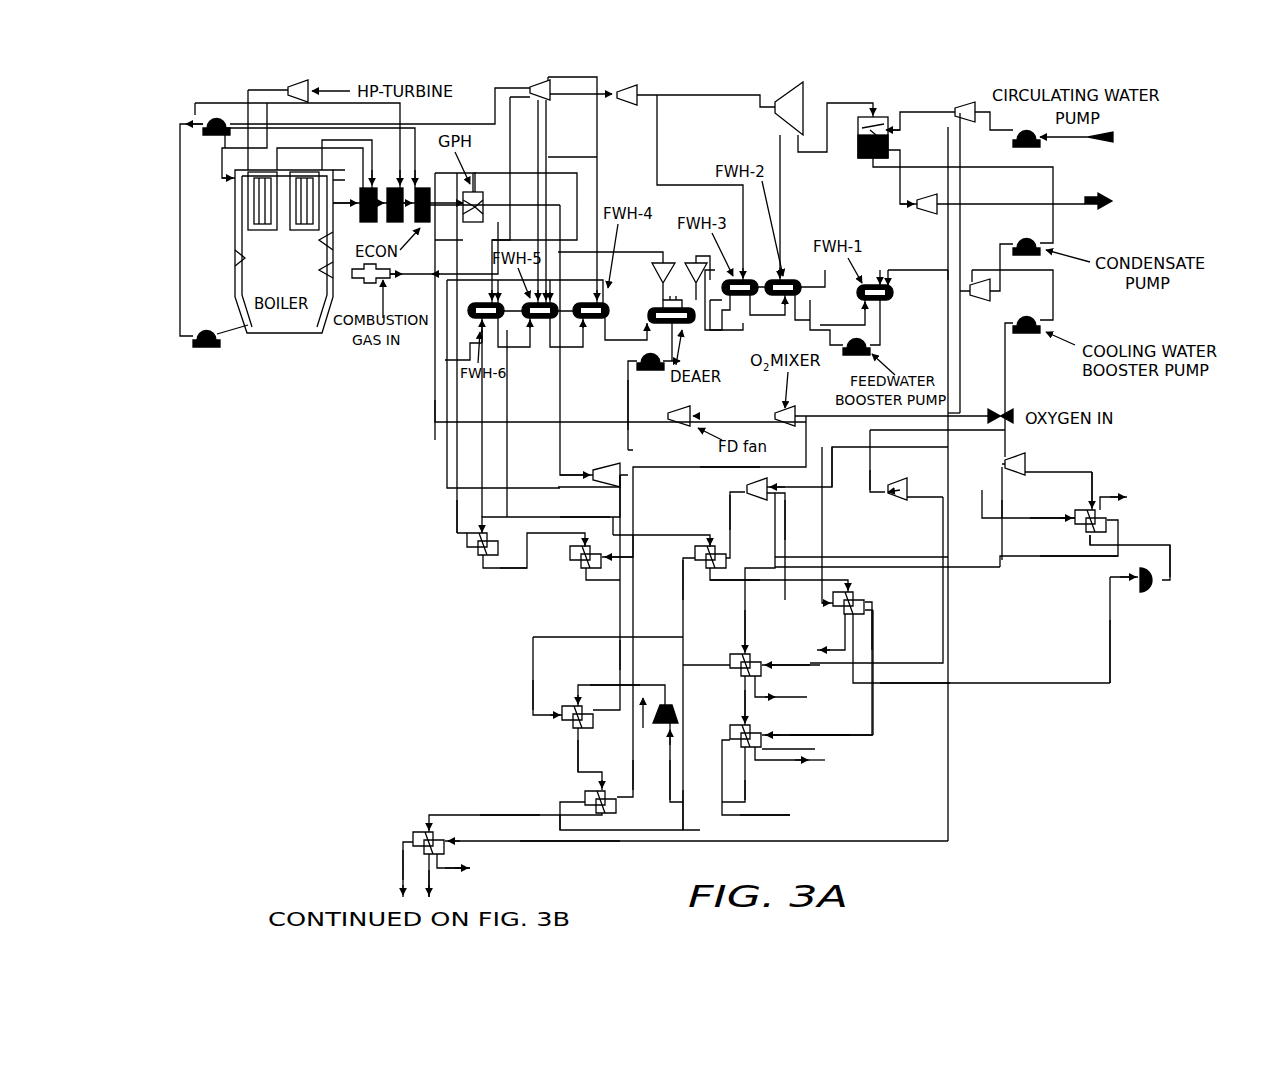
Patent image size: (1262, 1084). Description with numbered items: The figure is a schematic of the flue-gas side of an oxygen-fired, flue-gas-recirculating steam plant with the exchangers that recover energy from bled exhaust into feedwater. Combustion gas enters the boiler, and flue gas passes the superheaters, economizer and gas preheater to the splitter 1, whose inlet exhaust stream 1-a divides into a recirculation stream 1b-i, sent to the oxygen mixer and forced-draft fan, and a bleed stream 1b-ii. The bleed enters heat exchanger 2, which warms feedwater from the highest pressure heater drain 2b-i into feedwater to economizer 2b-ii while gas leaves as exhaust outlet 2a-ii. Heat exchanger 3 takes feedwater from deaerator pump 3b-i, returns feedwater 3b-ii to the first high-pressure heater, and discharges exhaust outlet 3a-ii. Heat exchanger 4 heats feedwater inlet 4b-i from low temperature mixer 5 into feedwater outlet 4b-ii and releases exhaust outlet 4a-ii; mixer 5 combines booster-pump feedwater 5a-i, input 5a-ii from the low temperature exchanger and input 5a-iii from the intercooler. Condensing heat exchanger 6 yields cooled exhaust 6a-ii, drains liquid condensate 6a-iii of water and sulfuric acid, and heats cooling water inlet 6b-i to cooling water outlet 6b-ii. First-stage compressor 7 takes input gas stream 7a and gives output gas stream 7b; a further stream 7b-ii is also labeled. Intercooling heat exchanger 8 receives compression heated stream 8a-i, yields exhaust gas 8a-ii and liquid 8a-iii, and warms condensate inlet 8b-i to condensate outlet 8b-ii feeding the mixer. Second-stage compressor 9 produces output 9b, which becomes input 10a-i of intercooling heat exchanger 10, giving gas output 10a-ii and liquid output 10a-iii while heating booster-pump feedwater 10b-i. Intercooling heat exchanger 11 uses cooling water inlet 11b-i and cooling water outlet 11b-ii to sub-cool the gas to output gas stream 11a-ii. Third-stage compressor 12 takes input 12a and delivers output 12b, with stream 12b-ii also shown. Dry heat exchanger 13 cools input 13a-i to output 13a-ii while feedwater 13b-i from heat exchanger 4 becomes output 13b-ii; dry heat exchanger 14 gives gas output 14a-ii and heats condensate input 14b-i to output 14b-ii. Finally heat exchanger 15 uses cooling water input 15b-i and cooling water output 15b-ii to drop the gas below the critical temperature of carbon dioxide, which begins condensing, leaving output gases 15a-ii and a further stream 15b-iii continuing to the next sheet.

The splitter 1 is at (602, 470).
The inlet exhaust stream 1-a is at (575, 468).
The outlet exhaust recirculation stream 1b-i is at (700, 466).
The outlet exhaust bleed stream 1b-ii is at (606, 515).
The heat exchanger 2 is at (475, 558).
The heat exchanger exhaust outlet 2a-ii is at (507, 575).
The feedwater from drain of highest pressure heater 2b-i is at (518, 407).
The feedwater to economizer 2b-ii is at (452, 527).
The heat exchanger 3 is at (582, 574).
The exhaust outlet 3a-ii is at (662, 532).
The feedwater inlet from deaerator pump 3b-i is at (633, 405).
The feedwater out to first high-pressure feedwater heater 3b-ii is at (433, 451).
The heat exchanger 4 is at (718, 542).
The exhaust outlet 4a-ii is at (733, 582).
The feedwater inlet from low temperature mixer 4b-i is at (727, 503).
The feedwater outlet 4b-ii is at (679, 577).
The low temperature mixer 5 is at (757, 504).
The feedwater from booster pump 5a-i is at (837, 477).
The input from low temperature heat exchanger 5a-ii is at (792, 504).
The input from intercooling heat exchanger 5a-iii is at (856, 553).
The heat exchanger 6 is at (870, 596).
The cooled exhaust gas output 6a-ii is at (908, 688).
The liquid condensate out 6a-iii is at (842, 645).
The input from cooling water booster pump 6b-i is at (897, 452).
The output cooling water 6b-ii is at (877, 622).
The compressor (first stage) 7 is at (1150, 594).
The input gas stream 7a is at (1100, 630).
The output gas stream from compressor 7b is at (1180, 557).
The stream 7b-ii is at (815, 749).
The intercooling heat exchanger 8 is at (1070, 528).
The compression heated stream from compressor 8a-i is at (1145, 543).
The exhaust gas out 8a-ii is at (1098, 478).
The liquid out 8a-iii is at (1132, 490).
The condensate inlet 8b-i is at (1063, 500).
The condensate outlet 8b-ii is at (1052, 560).
The compressor (second stage) 9 is at (1028, 465).
The output from compressor stage 2 9b is at (998, 533).
The intercooling heat exchanger 10 is at (738, 655).
The input from compressor stage 2 10a-i is at (748, 645).
The output hot side exhaust gas 10a-ii is at (741, 710).
The output liquid 10a-iii is at (790, 697).
The input cold side split from feedwater booster pump 10b-i is at (803, 662).
The intercooling heat exchanger 11 is at (738, 728).
The output gas stream 11a-ii is at (752, 793).
The cooling water inlet 11b-i is at (790, 733).
The cooling water outlet 11b-ii is at (695, 808).
The compressor (third stage) 12 is at (666, 700).
The input 12a is at (665, 795).
The output 12b is at (647, 729).
The stream 12b-ii is at (770, 820).
The heat exchanger 13 is at (562, 731).
The input 13a-i is at (603, 683).
The output 13a-ii is at (573, 764).
The input cooling stream from heat exchanger 4 13b-i is at (530, 693).
The output 13b-ii is at (616, 655).
The heat exchanger 14 is at (582, 796).
The output 14a-ii is at (497, 813).
The input condensate 14b-i is at (557, 828).
The output 14b-ii is at (627, 773).
The heat exchanger 15 is at (412, 826).
The output of gases 15a-ii is at (440, 888).
The cooling water input 15b-i is at (512, 845).
The cooling water output 15b-ii is at (397, 860).
The stream 15b-iii is at (482, 870).